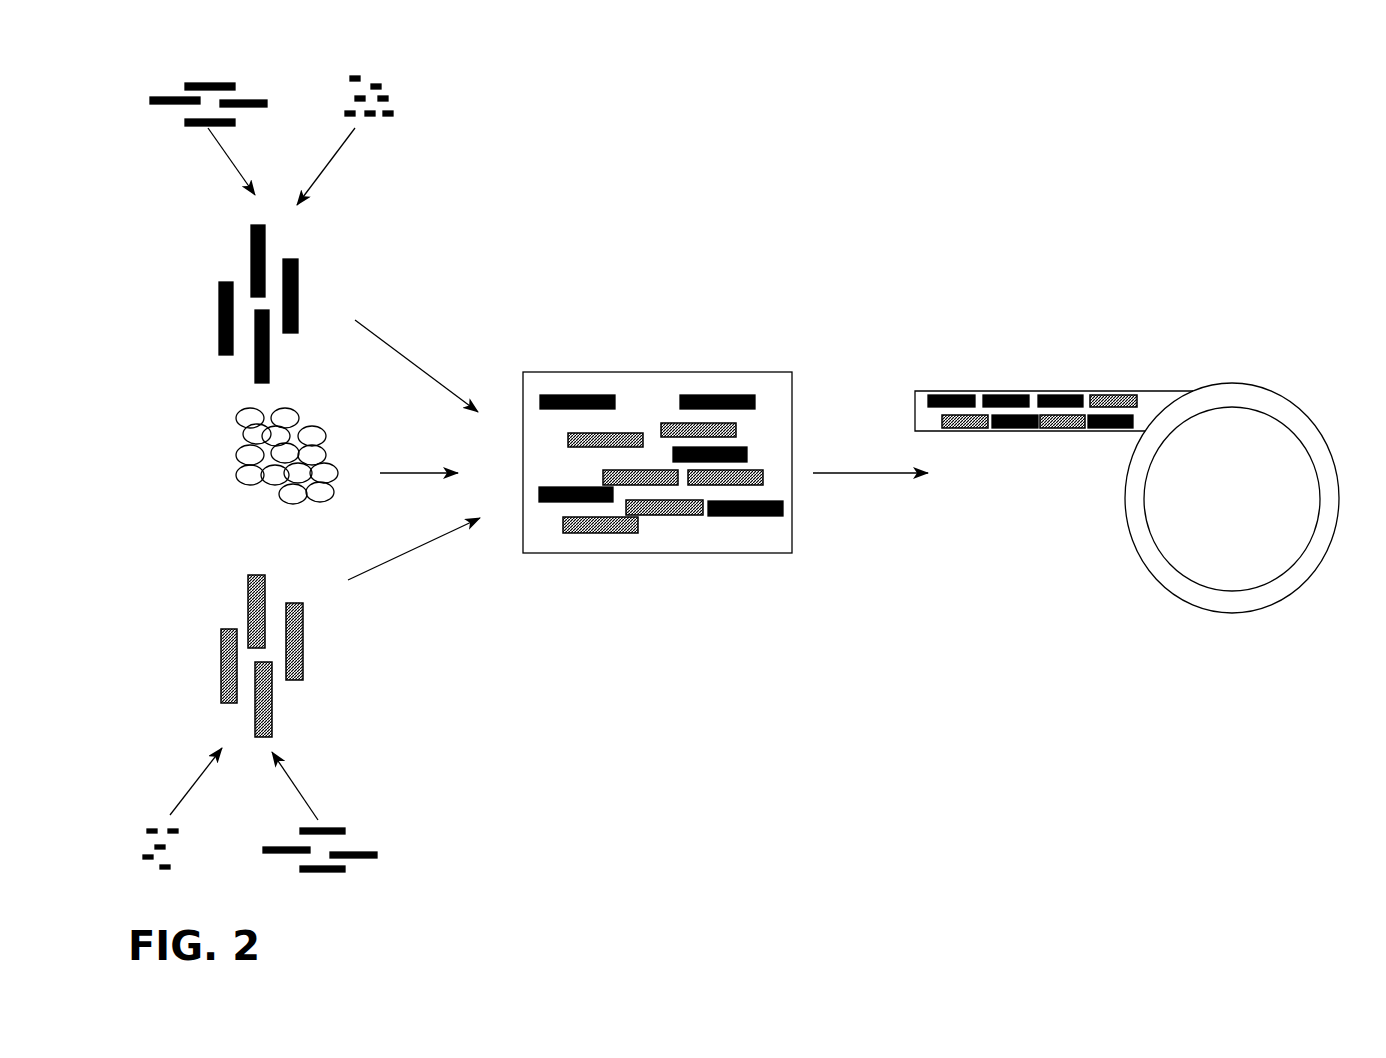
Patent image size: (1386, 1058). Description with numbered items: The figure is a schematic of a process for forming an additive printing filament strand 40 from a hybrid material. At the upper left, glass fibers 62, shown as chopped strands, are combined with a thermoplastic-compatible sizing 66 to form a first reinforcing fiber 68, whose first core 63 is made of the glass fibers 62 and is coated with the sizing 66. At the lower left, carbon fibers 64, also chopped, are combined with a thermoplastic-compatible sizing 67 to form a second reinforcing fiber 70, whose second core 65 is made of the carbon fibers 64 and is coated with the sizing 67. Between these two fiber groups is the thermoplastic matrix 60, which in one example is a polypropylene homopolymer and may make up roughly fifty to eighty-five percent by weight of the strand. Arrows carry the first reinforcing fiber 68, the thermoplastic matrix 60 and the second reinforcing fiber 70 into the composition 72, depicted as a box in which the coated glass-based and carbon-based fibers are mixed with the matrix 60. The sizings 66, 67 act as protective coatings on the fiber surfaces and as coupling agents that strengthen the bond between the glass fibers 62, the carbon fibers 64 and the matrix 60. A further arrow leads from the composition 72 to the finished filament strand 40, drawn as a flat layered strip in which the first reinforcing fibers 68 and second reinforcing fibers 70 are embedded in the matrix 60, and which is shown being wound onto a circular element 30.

The rotor / cylindrical core 30 is at (1252, 476).
The additive printing filament strand 40 is at (1170, 386).
The thermoplastic matrix 60 is at (220, 440).
The glass fibers 62 is at (173, 86).
The first core 63 is at (297, 289).
The carbon fibers 64 is at (365, 831).
The second core 65 is at (303, 653).
The thermoplastic-compatible sizing 66 is at (402, 77).
The thermoplastic-compatible sizing 67 is at (304, 623).
The first reinforcing fiber 68 is at (225, 258).
The second reinforcing fiber 70 is at (225, 612).
The composition 72 is at (660, 366).